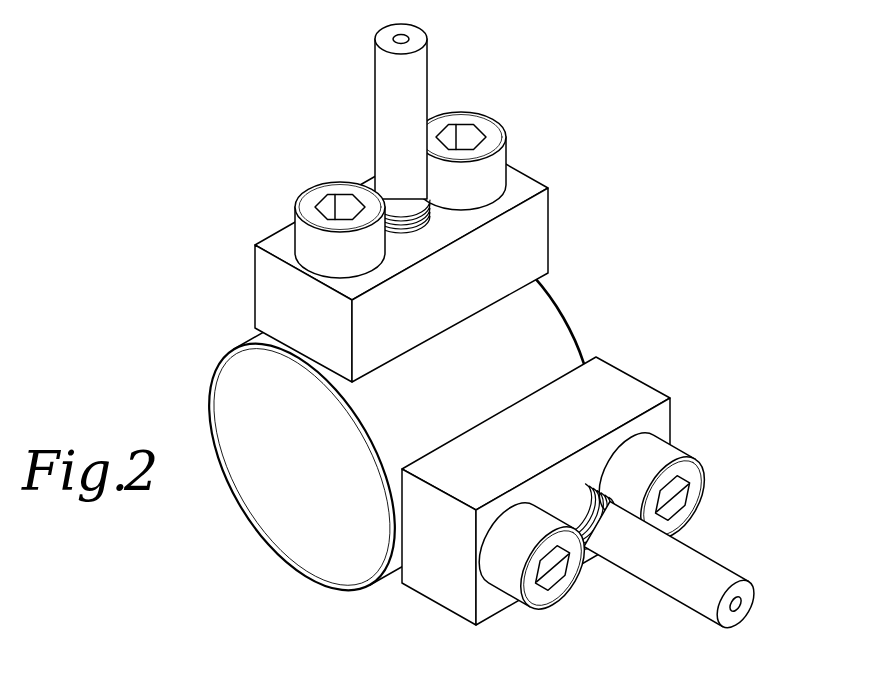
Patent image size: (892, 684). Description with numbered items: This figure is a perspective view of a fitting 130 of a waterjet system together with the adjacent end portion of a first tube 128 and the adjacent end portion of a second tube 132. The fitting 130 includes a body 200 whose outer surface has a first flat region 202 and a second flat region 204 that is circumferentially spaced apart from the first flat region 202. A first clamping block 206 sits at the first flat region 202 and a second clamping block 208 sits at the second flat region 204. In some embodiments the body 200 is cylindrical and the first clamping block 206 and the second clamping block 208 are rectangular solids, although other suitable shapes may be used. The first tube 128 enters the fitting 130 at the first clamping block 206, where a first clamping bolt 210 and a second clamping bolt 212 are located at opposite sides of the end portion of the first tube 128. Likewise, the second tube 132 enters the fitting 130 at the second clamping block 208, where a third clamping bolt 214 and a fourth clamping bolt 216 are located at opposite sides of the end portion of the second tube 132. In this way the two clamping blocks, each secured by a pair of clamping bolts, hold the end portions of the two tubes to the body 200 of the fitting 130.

The first tube 128 is at (423, 72).
The fitting 130 is at (472, 354).
The second tube 132 is at (705, 573).
The body 200 is at (548, 328).
The first flat region 202 is at (309, 357).
The second flat region 204 is at (408, 535).
The first clamping block 206 is at (256, 292).
The second clamping block 208 is at (633, 393).
The first clamping bolt 210 is at (308, 197).
The second clamping bolt 212 is at (502, 132).
The third clamping bolt 214 is at (540, 600).
The fourth clamping bolt 216 is at (697, 494).